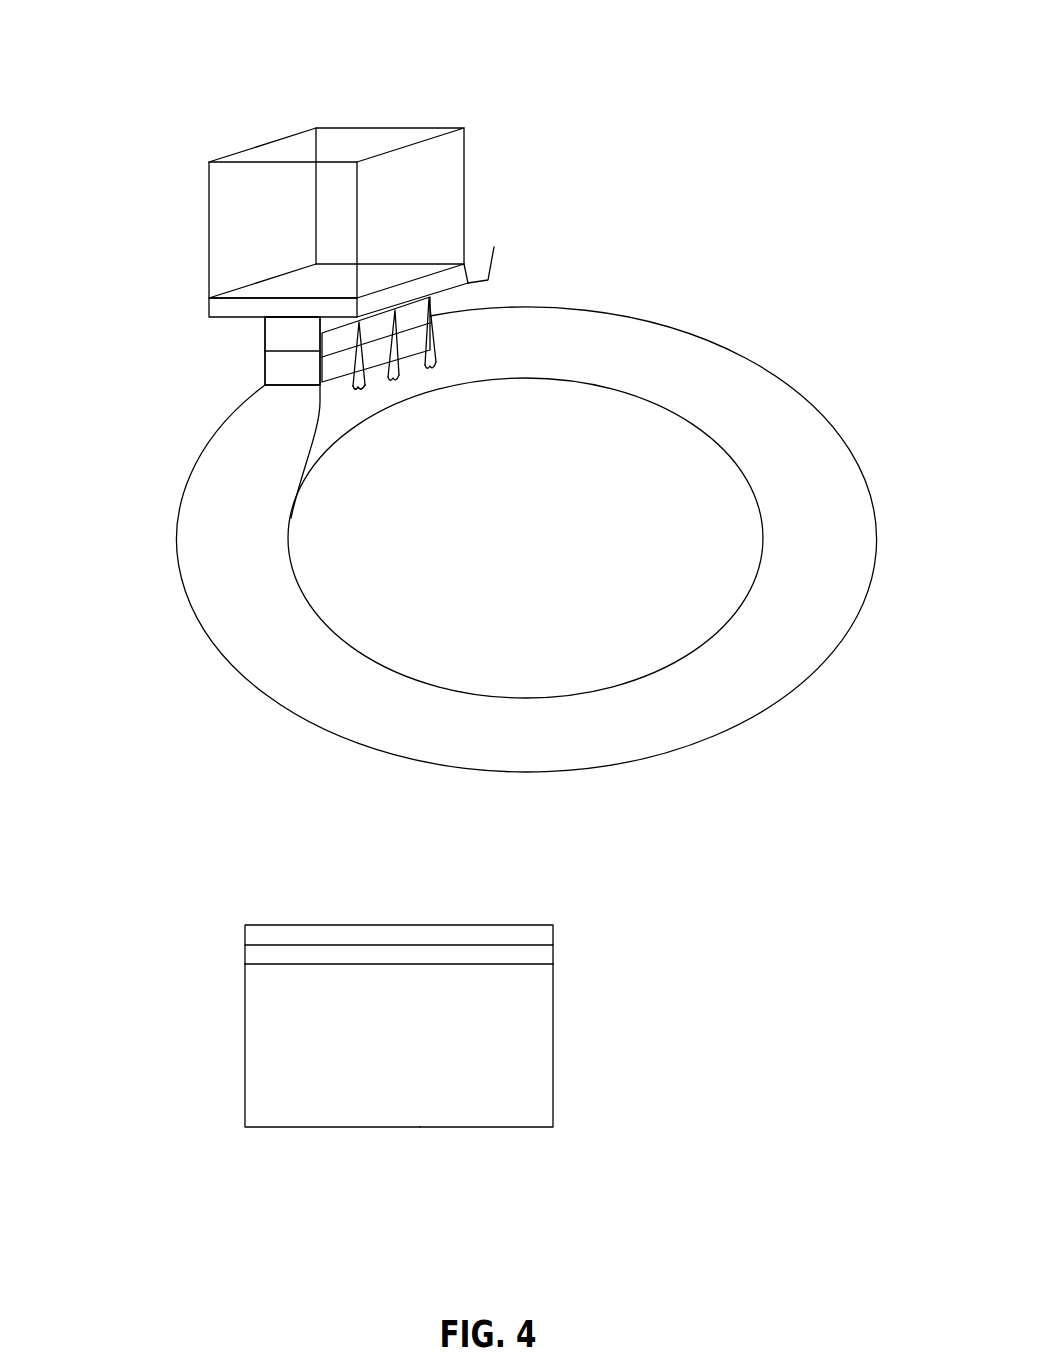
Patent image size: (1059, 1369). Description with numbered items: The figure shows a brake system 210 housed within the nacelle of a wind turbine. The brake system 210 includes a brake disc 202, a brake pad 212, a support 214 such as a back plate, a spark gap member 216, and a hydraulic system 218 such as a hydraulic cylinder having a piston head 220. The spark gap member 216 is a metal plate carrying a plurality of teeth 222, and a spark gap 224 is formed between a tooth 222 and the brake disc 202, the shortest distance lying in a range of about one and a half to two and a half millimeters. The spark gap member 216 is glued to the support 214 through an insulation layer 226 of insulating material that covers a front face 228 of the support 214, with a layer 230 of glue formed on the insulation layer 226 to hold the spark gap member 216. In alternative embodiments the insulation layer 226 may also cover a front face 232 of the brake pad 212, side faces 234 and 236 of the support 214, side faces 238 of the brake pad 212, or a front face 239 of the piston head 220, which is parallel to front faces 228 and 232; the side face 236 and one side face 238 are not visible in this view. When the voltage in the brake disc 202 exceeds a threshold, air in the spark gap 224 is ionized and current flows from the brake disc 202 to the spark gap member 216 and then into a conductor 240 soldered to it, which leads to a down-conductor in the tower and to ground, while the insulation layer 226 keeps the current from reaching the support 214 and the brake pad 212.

The brake disc 202 is at (660, 725).
The brake system 210 is at (655, 52).
The brake pad 212 is at (312, 402).
The support 214 is at (280, 340).
The spark gap member 216 is at (366, 400).
The hydraulic system 218 is at (146, 216).
The piston head 220 is at (211, 312).
The teeth 222 is at (437, 353).
The spark gap 224 is at (428, 363).
The insulation layer 226 is at (553, 950).
The front face 228 is at (264, 965).
The layer of glue 230 is at (553, 937).
The front face 232 is at (327, 365).
The side face 234 is at (278, 327).
The side face 236 is at (553, 1043).
The side face 238 is at (280, 375).
The front face 239 is at (467, 270).
The conductor 240 is at (496, 259).